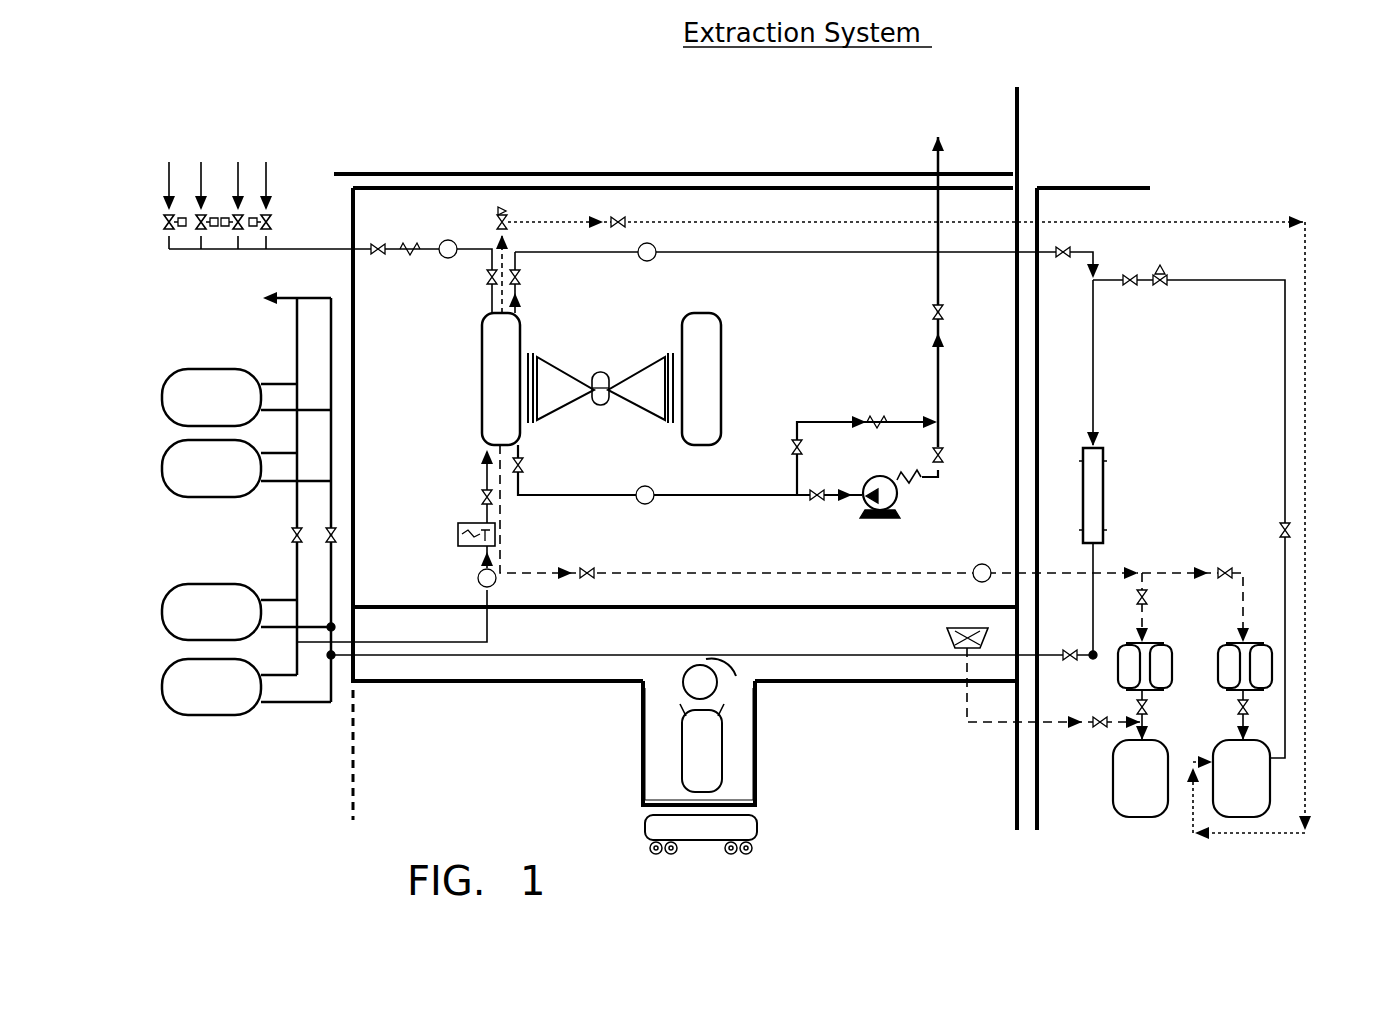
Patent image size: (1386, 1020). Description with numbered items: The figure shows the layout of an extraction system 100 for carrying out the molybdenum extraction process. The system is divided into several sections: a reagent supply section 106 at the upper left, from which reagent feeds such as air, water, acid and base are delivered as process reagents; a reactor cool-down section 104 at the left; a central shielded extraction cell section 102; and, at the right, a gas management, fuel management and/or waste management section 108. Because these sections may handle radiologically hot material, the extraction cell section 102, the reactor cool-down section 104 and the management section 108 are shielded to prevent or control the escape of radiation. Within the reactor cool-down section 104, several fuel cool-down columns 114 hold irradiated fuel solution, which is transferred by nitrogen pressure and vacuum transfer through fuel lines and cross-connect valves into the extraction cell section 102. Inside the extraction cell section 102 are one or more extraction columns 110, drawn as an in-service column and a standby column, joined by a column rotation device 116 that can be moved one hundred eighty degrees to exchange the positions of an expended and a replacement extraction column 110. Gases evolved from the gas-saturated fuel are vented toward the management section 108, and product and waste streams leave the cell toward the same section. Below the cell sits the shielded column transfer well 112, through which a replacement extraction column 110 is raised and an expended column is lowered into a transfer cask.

The extraction system 100 is at (529, 148).
The extraction cell section 102 is at (1028, 184).
The reactor cool-down section 104 is at (160, 337).
The reagent supply section 106 is at (157, 93).
The gas management, fuel management and/or waste management section 108 is at (1303, 200).
The extraction column 110 is at (482, 335).
The column transfer well 112 is at (549, 774).
The fuel cool-down columns 114 is at (228, 369).
The column rotation device 116 is at (613, 318).